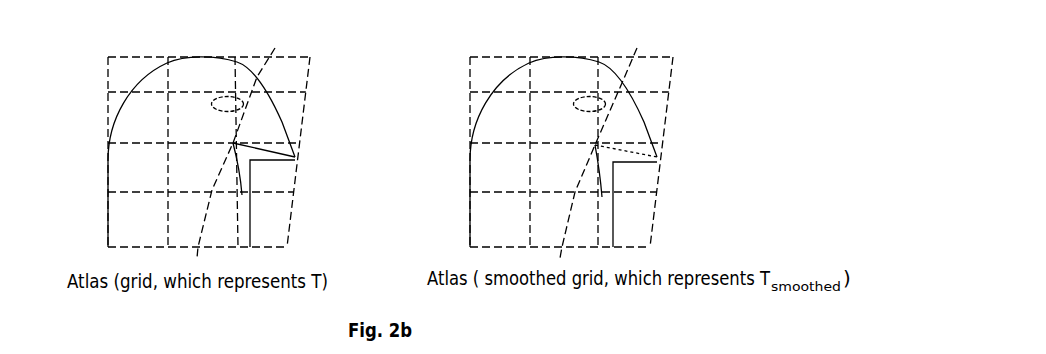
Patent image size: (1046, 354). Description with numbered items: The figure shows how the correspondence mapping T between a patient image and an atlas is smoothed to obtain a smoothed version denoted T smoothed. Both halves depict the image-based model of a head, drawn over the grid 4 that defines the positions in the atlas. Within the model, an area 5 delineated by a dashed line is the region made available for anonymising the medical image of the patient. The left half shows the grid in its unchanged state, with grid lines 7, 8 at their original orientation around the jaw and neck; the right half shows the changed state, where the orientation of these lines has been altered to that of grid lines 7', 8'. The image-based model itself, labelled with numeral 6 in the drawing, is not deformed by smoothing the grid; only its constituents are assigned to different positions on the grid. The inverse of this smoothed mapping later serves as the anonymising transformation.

The grid 4 is at (307, 100).
The area 5 is at (273, 75).
The atlas image of head 6 is at (272, 133).
The grid line 7 is at (305, 163).
The grid line 8 is at (286, 196).
The grid line 7' is at (672, 132).
The grid line 8' is at (653, 201).